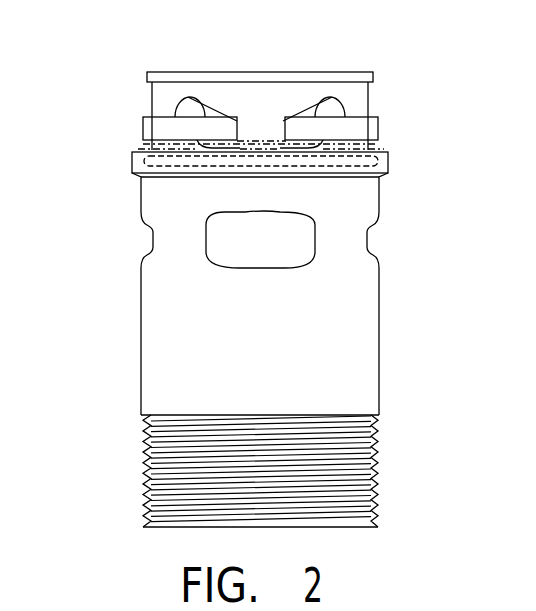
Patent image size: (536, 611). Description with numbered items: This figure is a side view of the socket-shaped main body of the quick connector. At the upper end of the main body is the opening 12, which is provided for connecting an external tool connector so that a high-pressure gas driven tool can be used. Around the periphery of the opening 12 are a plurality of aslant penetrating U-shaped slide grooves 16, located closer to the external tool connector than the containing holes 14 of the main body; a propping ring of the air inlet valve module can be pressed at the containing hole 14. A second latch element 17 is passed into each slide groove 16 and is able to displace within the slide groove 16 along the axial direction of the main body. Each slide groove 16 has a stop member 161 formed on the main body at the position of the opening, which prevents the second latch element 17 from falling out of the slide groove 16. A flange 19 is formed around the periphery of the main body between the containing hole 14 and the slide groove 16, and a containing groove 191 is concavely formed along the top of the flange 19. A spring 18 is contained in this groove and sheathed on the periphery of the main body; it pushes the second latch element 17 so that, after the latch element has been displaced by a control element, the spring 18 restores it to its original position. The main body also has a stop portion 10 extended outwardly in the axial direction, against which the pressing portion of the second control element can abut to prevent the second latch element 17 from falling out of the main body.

The stop portion 10 is at (149, 76).
The opening 12 is at (318, 72).
The containing hole 14 is at (148, 248).
The U-shaped slide groove 16 is at (183, 105).
The stop member 161 is at (262, 127).
The second latch element 17 is at (358, 120).
The spring 18 is at (378, 143).
The flange 19 is at (131, 167).
The containing groove 191 is at (150, 160).